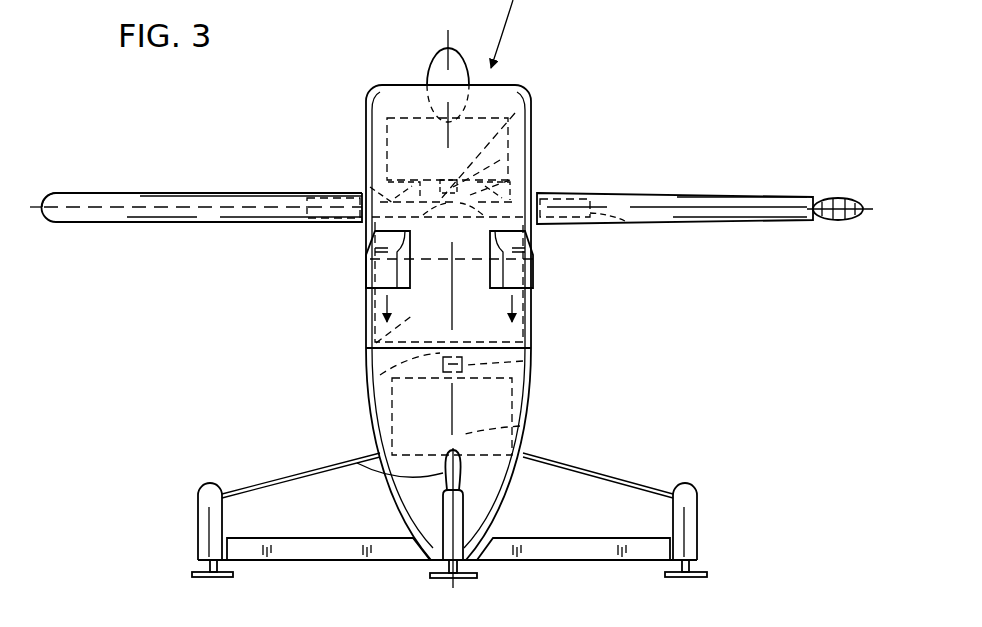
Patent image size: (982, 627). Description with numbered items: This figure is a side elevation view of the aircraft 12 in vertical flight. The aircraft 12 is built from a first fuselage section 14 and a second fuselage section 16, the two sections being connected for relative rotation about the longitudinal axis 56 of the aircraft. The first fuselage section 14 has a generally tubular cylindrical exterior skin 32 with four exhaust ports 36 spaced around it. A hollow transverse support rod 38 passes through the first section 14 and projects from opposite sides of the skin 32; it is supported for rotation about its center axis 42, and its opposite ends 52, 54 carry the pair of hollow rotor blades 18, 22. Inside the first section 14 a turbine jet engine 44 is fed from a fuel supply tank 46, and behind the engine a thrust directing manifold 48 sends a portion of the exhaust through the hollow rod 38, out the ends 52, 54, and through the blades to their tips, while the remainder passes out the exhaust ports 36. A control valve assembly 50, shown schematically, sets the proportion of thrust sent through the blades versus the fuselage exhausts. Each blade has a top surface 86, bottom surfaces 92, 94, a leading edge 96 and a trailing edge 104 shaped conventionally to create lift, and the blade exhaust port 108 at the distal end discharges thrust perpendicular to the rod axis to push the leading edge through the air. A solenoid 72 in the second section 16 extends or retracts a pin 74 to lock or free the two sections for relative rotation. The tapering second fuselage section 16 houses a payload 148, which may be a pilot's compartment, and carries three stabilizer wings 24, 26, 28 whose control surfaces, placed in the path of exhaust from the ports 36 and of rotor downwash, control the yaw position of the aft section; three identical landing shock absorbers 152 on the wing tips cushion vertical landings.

The aircraft 12 is at (634, 48).
The first fuselage section 14 is at (535, 114).
The second fuselage section 16 is at (535, 385).
The rotor blade 18 is at (105, 194).
The rotor blade 22 is at (731, 192).
The stabilizer wing 24 is at (357, 463).
The stabilizer wing 26 is at (300, 487).
The stabilizer wing 28 is at (580, 492).
The cylindrical exterior skin 32 is at (375, 128).
The exhaust ports 36 is at (385, 272).
The transverse support rod 38 is at (370, 187).
The center axis 42 is at (73, 204).
The turbine jet engine 44 is at (515, 113).
The fuel supply tank 46 is at (373, 347).
The thrust directing manifold 48 is at (510, 180).
The control valve assembly 50 is at (500, 160).
The rod end 52 is at (292, 219).
The rod end 54 is at (630, 223).
The longitudinal axis 56 is at (447, 33).
The solenoid 72 is at (523, 361).
The pin 74 is at (380, 375).
The top surface 86 is at (196, 194).
The bottom surface 92 is at (147, 223).
The bottom surface 94 is at (760, 222).
The leading edge 96 is at (157, 207).
The trailing edge 104 is at (722, 207).
The exhaust port 108 is at (845, 195).
The payload 148 is at (520, 426).
The landing shock absorbers 152 is at (203, 520).